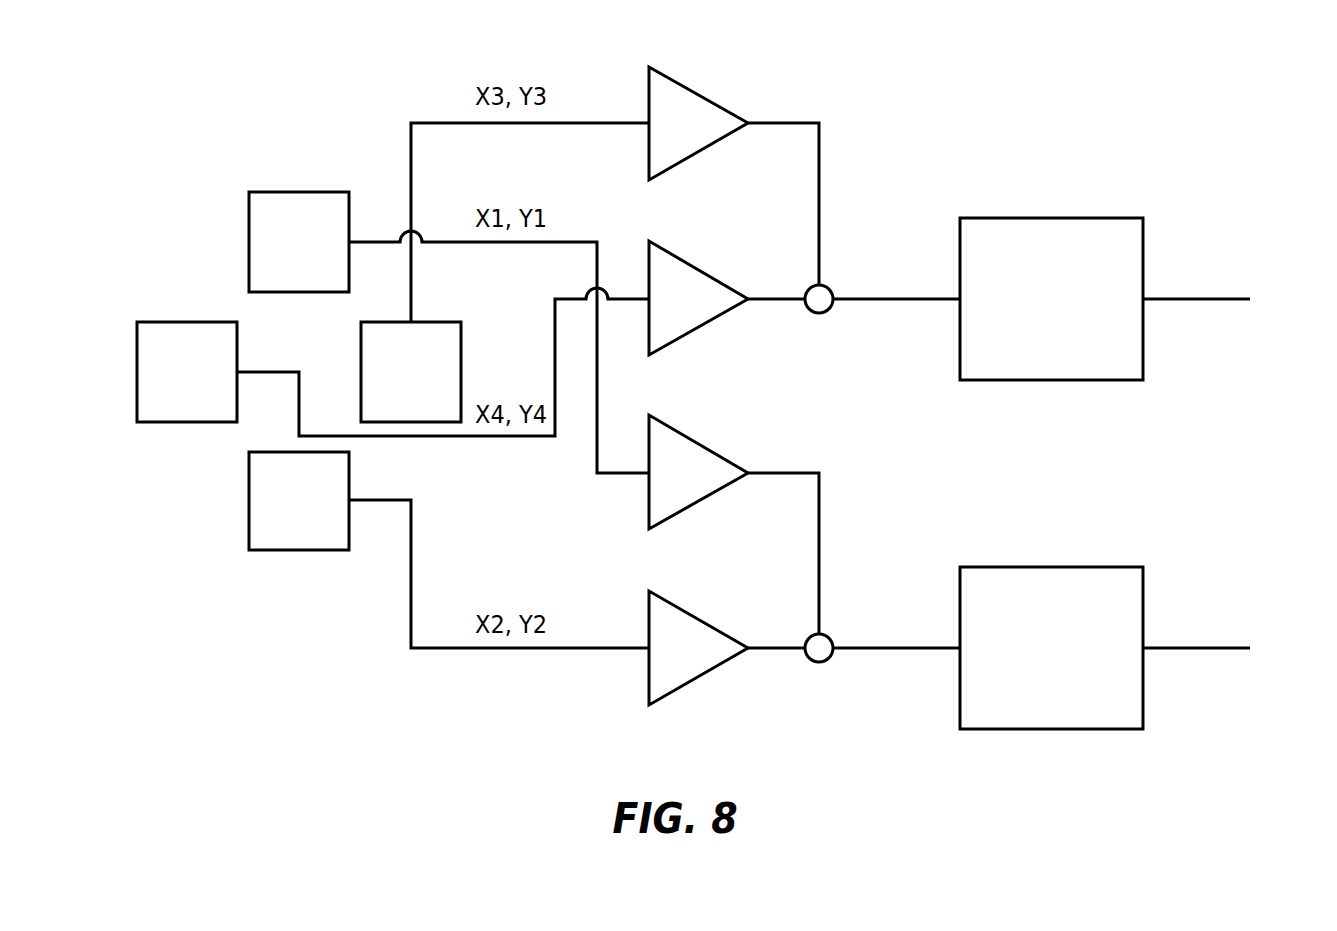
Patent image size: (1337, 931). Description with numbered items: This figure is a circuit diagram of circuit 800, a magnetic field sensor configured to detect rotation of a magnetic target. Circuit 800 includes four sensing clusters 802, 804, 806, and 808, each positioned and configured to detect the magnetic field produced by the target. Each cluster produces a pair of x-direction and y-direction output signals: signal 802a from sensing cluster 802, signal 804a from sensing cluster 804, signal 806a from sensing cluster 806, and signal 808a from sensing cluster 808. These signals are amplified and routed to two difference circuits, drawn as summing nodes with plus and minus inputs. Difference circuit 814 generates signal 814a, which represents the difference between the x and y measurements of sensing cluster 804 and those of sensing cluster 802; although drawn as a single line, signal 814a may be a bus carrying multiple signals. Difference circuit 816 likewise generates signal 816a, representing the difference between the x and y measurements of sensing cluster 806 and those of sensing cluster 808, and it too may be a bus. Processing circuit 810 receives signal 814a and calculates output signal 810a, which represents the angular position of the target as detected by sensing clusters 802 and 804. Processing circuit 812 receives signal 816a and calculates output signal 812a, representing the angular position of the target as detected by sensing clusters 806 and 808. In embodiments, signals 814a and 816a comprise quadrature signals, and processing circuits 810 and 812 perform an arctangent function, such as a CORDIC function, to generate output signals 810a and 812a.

The circuit 800 is at (228, 143).
The sensing cluster 802 is at (279, 254).
The sensing cluster 804 is at (279, 512).
The sensing cluster 806 is at (391, 384).
The sensing cluster 808 is at (167, 384).
The processing circuit 810 is at (1031, 660).
The processing circuit 812 is at (1031, 312).
The difference circuit 814 is at (819, 663).
The difference circuit 816 is at (819, 314).
The signal 802a is at (525, 245).
The signal 804a is at (525, 650).
The signal 806a is at (525, 125).
The signal 808a is at (427, 437).
The output signal 810a is at (1187, 646).
The output signal 812a is at (1187, 297).
The signal 814a is at (930, 650).
The signal 816a is at (930, 301).